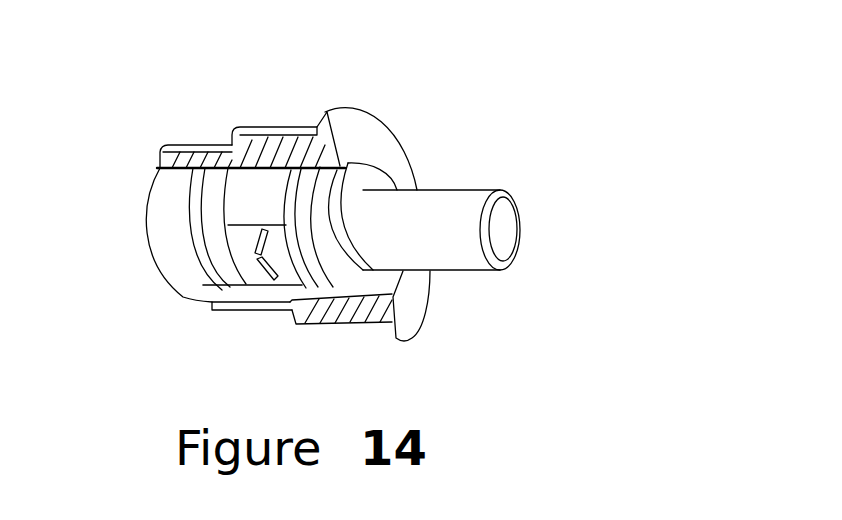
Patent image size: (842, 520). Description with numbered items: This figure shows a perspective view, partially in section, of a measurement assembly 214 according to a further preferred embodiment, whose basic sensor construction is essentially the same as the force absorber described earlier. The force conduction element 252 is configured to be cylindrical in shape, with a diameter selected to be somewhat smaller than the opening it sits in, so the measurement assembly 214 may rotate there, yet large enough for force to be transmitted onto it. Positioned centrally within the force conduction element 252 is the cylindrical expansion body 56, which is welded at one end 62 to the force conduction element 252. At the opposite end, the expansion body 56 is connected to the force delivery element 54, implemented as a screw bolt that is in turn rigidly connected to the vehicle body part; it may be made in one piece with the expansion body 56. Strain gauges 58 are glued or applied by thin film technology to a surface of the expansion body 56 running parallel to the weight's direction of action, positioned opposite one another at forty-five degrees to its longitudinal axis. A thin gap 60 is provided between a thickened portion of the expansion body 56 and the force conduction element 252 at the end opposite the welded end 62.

The measurement assembly 214 is at (515, 90).
The force conduction element 252 is at (268, 133).
The thin gap 60 is at (357, 168).
The end 62 is at (162, 168).
The expansion body 56 is at (167, 232).
The strain gauges 58 is at (258, 261).
The force delivery element 54 is at (448, 252).